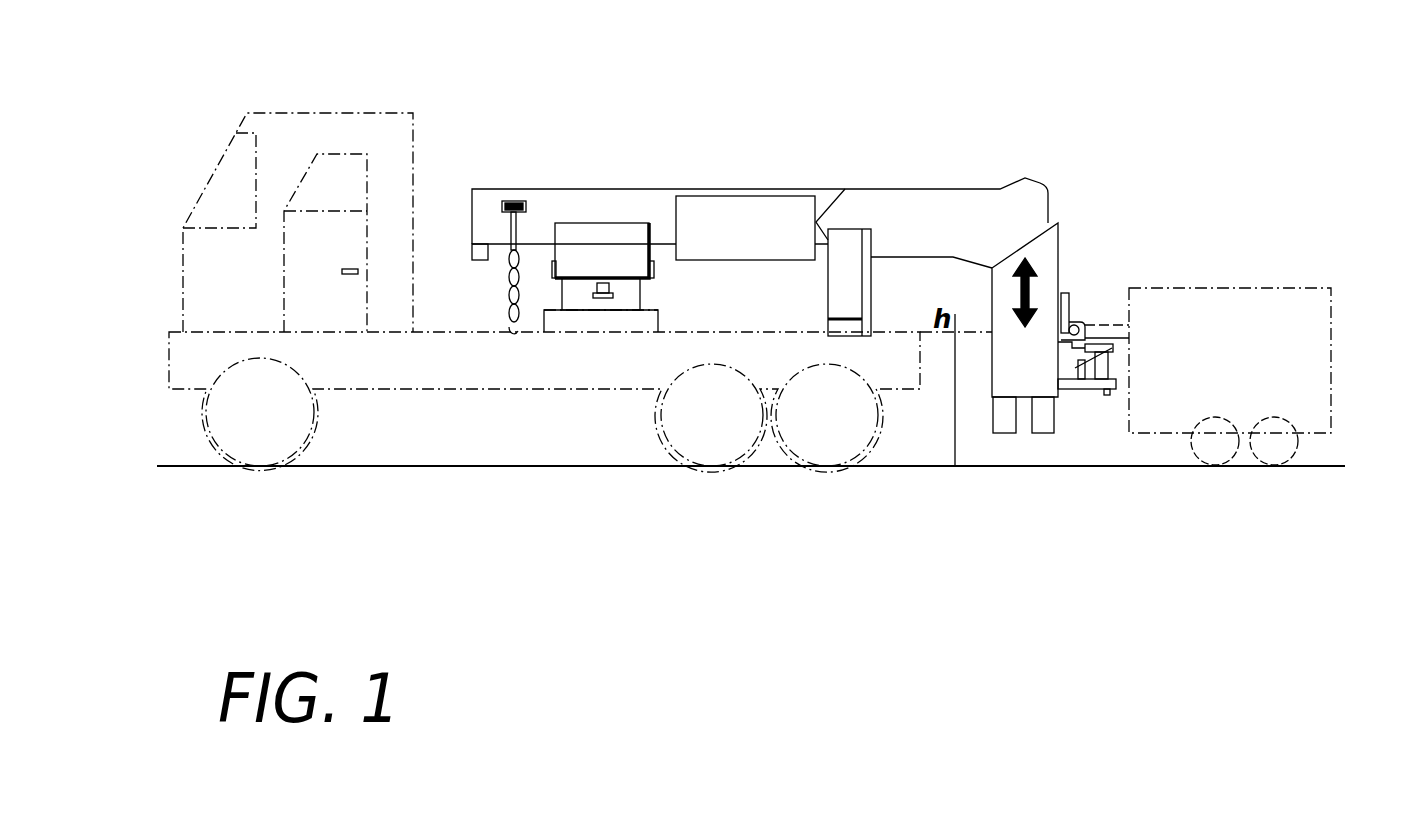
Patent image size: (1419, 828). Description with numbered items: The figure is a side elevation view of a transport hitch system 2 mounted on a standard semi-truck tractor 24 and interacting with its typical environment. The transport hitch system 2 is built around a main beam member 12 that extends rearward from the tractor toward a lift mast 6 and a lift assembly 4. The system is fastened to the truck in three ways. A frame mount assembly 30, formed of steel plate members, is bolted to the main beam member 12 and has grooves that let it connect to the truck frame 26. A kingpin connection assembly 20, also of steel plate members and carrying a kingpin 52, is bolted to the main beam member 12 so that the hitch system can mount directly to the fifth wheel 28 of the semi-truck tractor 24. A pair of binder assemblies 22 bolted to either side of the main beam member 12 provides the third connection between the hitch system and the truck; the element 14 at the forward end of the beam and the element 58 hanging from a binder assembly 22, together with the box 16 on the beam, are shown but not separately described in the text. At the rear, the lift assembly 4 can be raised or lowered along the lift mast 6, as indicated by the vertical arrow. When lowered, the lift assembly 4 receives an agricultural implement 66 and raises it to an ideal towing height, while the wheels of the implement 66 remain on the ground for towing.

The transport hitch system 2 is at (1088, 105).
The semi-truck tractor 24 is at (200, 158).
The truck frame 26 is at (588, 389).
The main beam member 12 is at (555, 189).
The boom end block 14 is at (472, 252).
The binder assemblies 22 is at (538, 208).
The chain 58 is at (509, 281).
The kingpin connection assembly 20 is at (665, 276).
The kingpin 52 is at (612, 283).
The fifth wheel 28 is at (567, 305).
The control unit 16 is at (745, 228).
The frame mount assembly 30 is at (873, 277).
The lift assembly 4 is at (1078, 262).
The lift mast 6 is at (1056, 413).
The agricultural implement 66 is at (1228, 288).